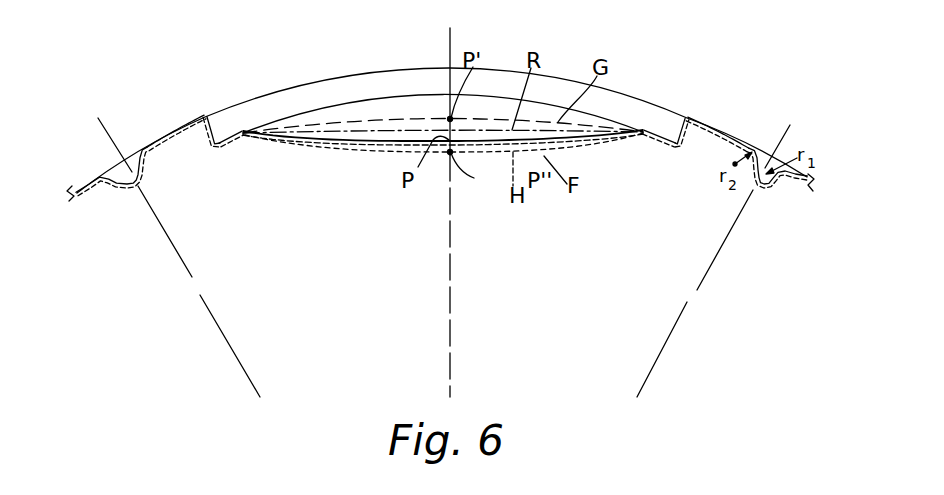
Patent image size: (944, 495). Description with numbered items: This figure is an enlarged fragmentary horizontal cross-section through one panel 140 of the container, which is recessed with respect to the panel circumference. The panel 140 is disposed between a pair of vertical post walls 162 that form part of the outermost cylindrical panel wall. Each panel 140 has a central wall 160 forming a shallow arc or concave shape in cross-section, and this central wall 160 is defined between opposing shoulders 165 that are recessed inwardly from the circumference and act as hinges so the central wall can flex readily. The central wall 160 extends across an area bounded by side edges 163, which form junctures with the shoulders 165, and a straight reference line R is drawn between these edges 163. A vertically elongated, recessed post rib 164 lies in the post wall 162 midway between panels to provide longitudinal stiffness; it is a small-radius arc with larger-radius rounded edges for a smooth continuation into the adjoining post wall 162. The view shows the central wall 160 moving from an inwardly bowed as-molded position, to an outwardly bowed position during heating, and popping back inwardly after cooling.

The panel 140 is at (389, 128).
The central wall 160 is at (349, 139).
The post wall 162 is at (168, 134).
The side edge 163 is at (243, 137).
The post rib 164 is at (132, 188).
The shoulder 165 is at (216, 118).